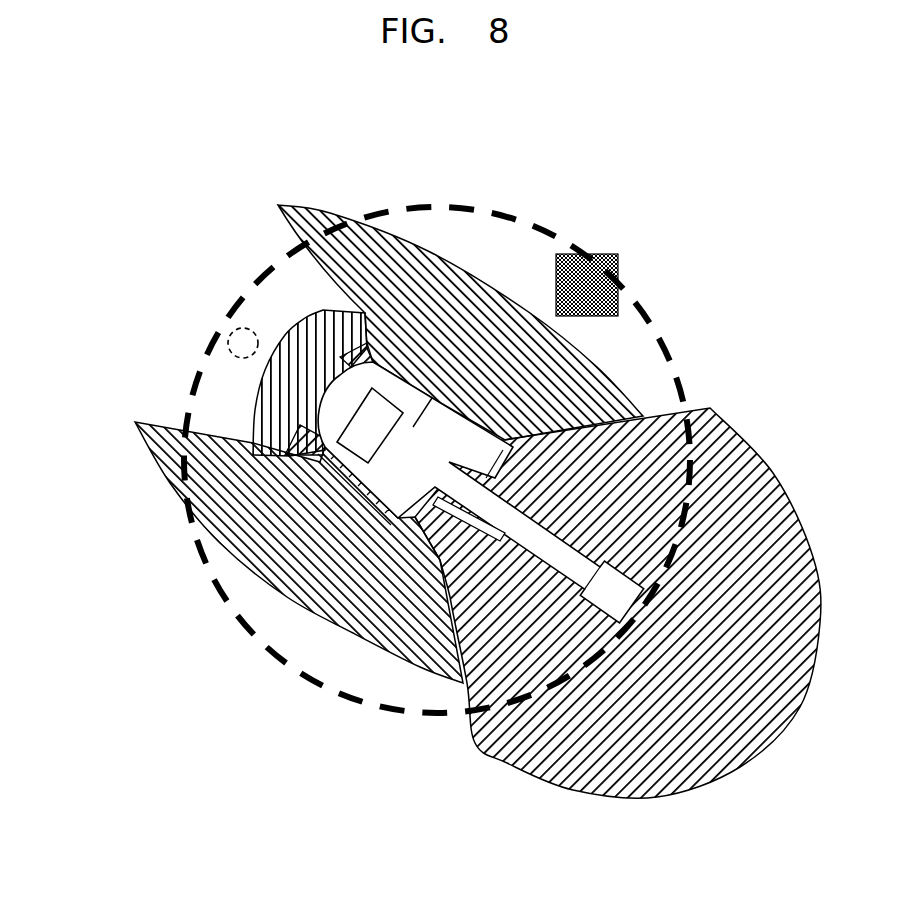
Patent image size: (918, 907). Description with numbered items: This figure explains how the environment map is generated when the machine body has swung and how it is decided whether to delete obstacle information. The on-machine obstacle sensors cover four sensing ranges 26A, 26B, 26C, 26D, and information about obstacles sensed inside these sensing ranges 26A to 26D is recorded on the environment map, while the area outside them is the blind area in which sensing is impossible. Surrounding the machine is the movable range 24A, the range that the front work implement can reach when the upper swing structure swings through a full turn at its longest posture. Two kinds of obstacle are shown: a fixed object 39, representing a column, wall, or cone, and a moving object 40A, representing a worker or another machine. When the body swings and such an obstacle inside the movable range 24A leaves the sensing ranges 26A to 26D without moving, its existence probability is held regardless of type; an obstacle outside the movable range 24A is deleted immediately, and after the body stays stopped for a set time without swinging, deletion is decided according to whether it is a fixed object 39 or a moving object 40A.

The sensing range 26A is at (727, 662).
The sensing range 26B is at (373, 566).
The sensing range 26C is at (470, 346).
The sensing range 26D is at (323, 401).
The movable range 24A is at (215, 566).
The fixed object 39 is at (607, 254).
The moving object 40A is at (254, 378).